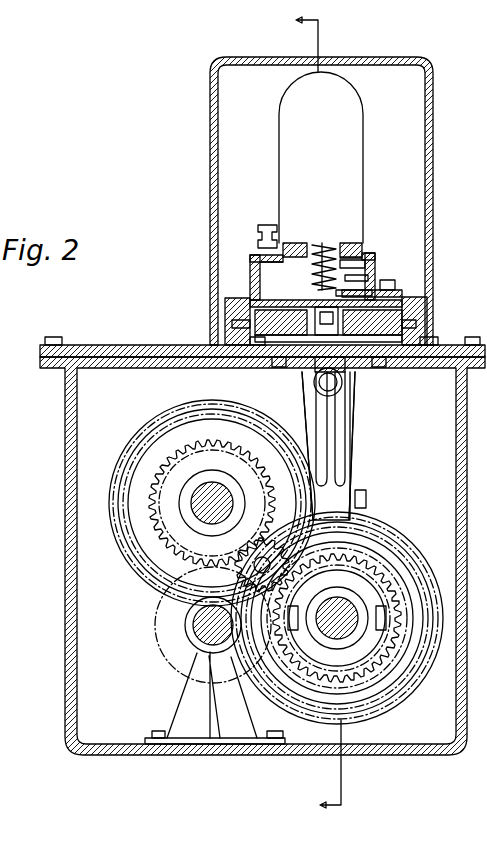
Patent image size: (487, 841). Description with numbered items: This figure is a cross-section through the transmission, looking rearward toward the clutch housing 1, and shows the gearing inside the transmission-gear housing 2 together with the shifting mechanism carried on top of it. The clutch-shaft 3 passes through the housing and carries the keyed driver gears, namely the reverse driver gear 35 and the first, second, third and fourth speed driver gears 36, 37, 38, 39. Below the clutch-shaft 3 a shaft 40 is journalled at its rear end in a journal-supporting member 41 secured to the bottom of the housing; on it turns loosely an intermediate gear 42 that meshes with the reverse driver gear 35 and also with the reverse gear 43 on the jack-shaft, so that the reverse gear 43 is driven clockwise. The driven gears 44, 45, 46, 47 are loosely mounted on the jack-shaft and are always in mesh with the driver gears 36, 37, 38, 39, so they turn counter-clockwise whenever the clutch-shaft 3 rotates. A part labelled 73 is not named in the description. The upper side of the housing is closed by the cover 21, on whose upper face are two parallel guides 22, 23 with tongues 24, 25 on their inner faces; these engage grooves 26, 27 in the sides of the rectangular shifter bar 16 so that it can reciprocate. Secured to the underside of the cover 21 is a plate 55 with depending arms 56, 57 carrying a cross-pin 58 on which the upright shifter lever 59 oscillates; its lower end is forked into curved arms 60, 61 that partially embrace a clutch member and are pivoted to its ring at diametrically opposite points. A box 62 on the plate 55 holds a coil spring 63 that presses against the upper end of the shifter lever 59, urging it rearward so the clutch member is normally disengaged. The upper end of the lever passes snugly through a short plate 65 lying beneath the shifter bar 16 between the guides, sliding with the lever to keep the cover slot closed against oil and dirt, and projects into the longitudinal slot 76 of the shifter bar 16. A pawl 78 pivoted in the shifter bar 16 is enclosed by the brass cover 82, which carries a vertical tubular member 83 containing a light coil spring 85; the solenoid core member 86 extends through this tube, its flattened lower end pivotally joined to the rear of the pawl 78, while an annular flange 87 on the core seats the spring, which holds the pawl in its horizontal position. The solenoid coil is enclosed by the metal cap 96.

The clutch housing 1 is at (310, 414).
The transmission-gear housing 2 is at (68, 582).
The clutch-shaft 3 is at (205, 487).
The shifter bar 16 is at (258, 286).
The cover 21 is at (85, 345).
The guide 22 is at (230, 302).
The guide 23 is at (430, 296).
The tongue 24 is at (250, 340).
The tongue 25 is at (410, 323).
The groove 26 is at (235, 322).
The groove 27 is at (410, 310).
The reverse driver gear 35 is at (266, 486).
The first speed driver gear 36 is at (268, 503).
The second speed driver gear 37 is at (150, 450).
The third speed driver gear 38 is at (160, 424).
The fourth speed driver gear 39 is at (180, 404).
The shaft 40 is at (193, 626).
The journal-supporting member 41 is at (182, 696).
The intermediate gear 42 is at (160, 612).
The reverse gear 43 is at (333, 650).
The driven gear 44 is at (336, 688).
The driven gear 45 is at (370, 690).
The driven gear 46 is at (395, 686).
The driven gear 47 is at (425, 672).
The plate 55 is at (388, 362).
The depending arm 56 is at (305, 396).
The depending arm 57 is at (352, 398).
The cross-pin 58 is at (366, 497).
The shifter lever 59 is at (333, 445).
The curved arm 60 is at (306, 642).
The curved arm 61 is at (356, 632).
The box 62 is at (315, 372).
The coil spring 63 is at (342, 382).
The plate 65 is at (277, 362).
The shaft 73 is at (340, 630).
The longitudinal slot 76 is at (310, 326).
The pawl 78 is at (372, 292).
The brass cover 82 is at (352, 275).
The tubular member 83 is at (280, 246).
The coil spring 85 is at (322, 243).
The solenoid core member 86 is at (345, 292).
The annular flange 87 is at (362, 246).
The metal cap 96 is at (321, 164).